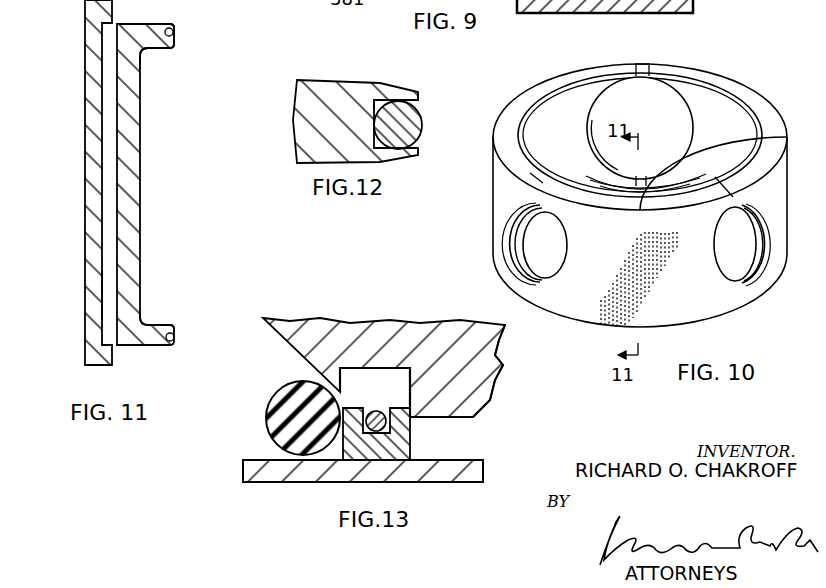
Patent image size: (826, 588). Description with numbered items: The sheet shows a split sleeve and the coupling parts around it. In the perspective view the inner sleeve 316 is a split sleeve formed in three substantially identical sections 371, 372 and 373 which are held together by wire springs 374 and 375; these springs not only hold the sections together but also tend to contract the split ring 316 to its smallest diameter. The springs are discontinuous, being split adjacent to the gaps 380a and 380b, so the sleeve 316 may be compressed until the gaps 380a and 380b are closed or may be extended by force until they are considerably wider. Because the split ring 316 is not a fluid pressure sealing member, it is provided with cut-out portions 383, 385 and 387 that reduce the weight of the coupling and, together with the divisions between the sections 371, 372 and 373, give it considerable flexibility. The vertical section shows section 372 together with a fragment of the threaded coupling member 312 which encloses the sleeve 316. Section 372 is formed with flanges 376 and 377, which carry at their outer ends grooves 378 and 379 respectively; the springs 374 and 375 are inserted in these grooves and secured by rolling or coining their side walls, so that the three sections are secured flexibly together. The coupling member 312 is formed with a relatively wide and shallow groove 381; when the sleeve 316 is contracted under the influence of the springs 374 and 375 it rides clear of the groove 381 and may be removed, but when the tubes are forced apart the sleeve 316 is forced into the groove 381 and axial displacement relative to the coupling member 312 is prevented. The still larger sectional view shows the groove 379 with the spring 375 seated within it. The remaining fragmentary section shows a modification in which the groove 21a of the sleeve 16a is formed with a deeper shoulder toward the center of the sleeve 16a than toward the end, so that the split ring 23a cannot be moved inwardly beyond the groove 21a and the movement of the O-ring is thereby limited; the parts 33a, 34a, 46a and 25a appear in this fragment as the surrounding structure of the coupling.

In FIG. 11, the coupling member 312 is at (90, 184).
In FIG. 11, the groove 381 is at (100, 293).
In FIG. 11, the section 372 is at (135, 199).
In FIG. 10, the section 372 is at (578, 297).
In FIG. 11, the wire spring 374 is at (176, 32).
In FIG. 11, the groove 378 is at (176, 40).
In FIG. 11, the flange 376 is at (150, 42).
In FIG. 11, the groove 379 is at (176, 333).
In FIG. 12, the groove 379 is at (400, 101).
In FIG. 11, the wire spring 375 is at (177, 342).
In FIG. 12, the wire spring 375 is at (405, 133).
In FIG. 11, the flange 377 is at (146, 334).
In FIG. 12, the flange 377 is at (348, 88).
In FIG. 10, the section 373 is at (772, 127).
In FIG. 10, the section 371 is at (512, 153).
In FIG. 10, the cut-out portion 385 is at (683, 95).
In FIG. 10, the gap 380a is at (643, 77).
In FIG. 10, the gap 380b is at (642, 174).
In FIG. 10, the cut-out portion 383 is at (500, 212).
In FIG. 10, the cut-out portion 387 is at (773, 248).
In FIG. 10, the inner sleeve 316 is at (711, 294).
In FIG. 13, the upper member 33a is at (301, 327).
In FIG. 13, the sleeve 16a is at (458, 370).
In FIG. 13, the groove 21a is at (366, 368).
In FIG. 13, the O-ring 46a is at (373, 410).
In FIG. 13, the ball 34a is at (278, 398).
In FIG. 13, the split ring 23a is at (402, 442).
In FIG. 13, the base plate 25a is at (277, 477).